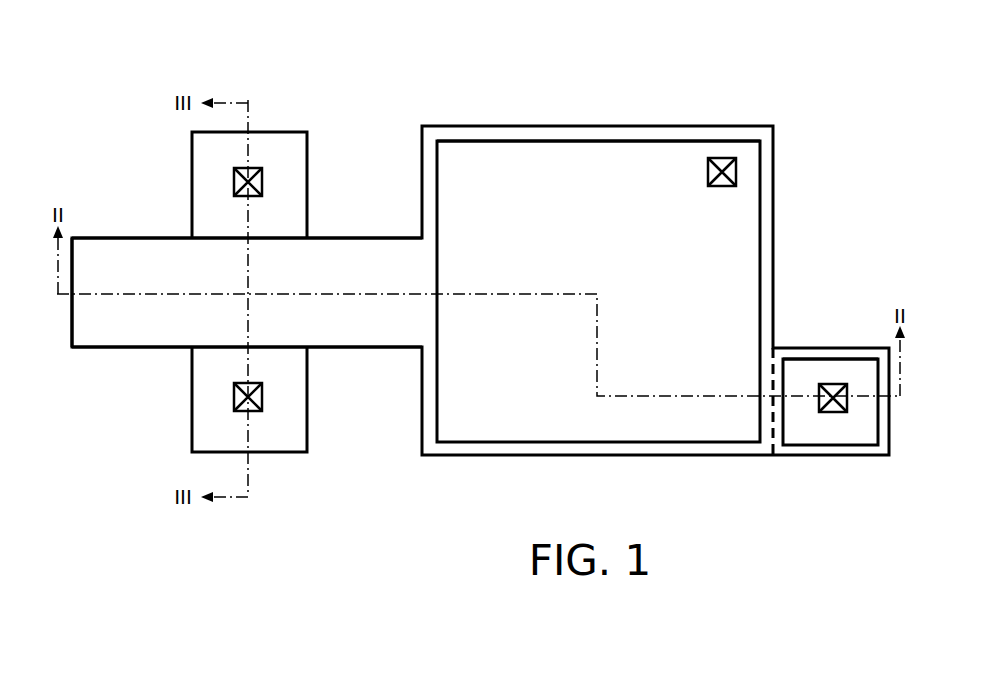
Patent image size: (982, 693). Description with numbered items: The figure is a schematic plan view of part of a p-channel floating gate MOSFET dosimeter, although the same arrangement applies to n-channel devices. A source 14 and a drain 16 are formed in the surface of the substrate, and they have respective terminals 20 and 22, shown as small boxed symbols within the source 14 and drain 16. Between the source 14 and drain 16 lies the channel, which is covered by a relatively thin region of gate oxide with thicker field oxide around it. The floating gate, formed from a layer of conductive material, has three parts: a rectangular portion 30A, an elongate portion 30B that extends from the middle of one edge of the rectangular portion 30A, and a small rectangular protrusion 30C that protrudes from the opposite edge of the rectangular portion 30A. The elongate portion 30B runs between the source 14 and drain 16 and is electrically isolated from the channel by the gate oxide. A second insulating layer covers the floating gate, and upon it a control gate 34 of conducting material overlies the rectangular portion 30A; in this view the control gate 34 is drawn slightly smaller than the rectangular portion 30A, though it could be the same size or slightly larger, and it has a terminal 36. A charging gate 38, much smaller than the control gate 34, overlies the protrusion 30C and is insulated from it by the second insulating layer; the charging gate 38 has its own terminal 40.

The source 14 is at (290, 432).
The drain 16 is at (292, 162).
The terminal 20 is at (233, 396).
The terminal 22 is at (233, 186).
The rectangular portion 30A is at (637, 126).
The elongate portion 30B is at (397, 348).
The rectangular protrusion 30C is at (847, 456).
The control gate 34 is at (465, 140).
The terminal 36 is at (737, 182).
The charging gate 38 is at (803, 357).
The terminal 40 is at (847, 408).